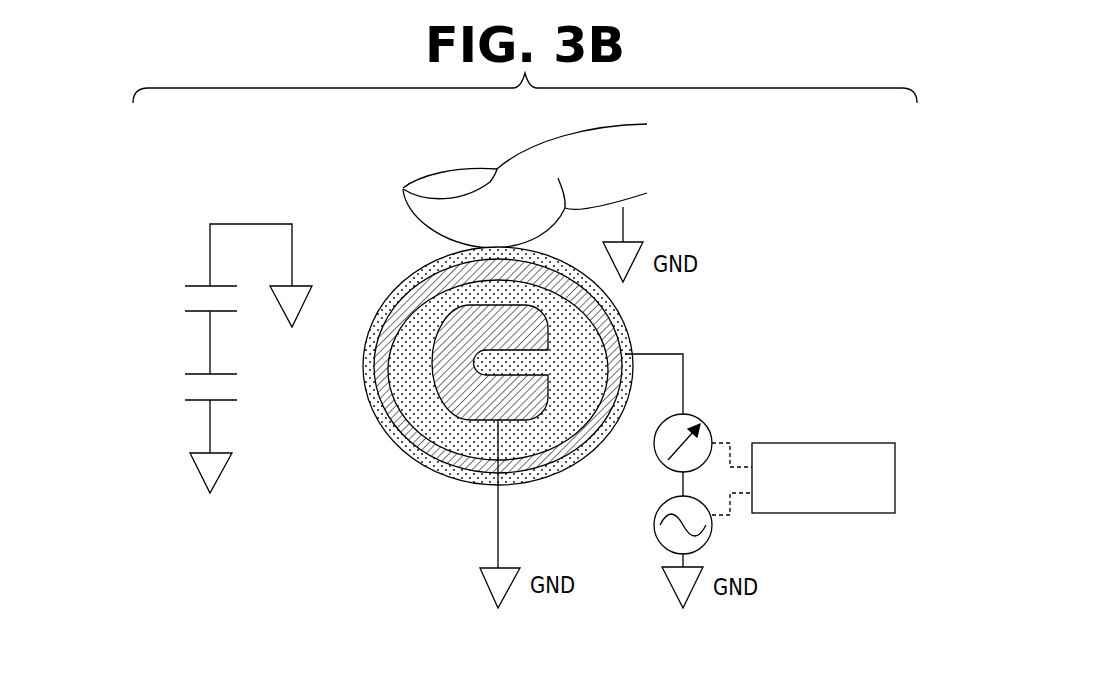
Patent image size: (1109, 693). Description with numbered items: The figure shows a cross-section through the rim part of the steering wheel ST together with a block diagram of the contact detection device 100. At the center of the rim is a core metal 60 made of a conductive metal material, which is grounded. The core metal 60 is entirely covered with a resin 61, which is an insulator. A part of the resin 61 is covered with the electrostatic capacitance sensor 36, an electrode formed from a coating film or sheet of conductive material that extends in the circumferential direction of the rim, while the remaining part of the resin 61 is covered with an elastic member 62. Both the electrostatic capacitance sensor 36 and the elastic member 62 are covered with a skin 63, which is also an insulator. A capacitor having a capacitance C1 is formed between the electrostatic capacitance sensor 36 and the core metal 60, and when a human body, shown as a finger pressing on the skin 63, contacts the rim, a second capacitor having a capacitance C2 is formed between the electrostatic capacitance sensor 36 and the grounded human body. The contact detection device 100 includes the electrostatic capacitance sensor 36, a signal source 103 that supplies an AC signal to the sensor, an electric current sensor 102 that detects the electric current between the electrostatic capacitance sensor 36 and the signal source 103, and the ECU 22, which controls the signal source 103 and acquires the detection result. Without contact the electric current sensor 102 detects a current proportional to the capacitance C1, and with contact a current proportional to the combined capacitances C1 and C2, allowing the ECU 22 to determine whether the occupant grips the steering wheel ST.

The ECU 22 is at (828, 442).
The electrostatic capacitance sensor 36 is at (375, 392).
The core metal 60 is at (467, 418).
The resin 61 is at (433, 423).
The elastic member 62 is at (548, 460).
The skin 63 is at (383, 428).
The contact detection device 100 is at (808, 262).
The electric current sensor 102 is at (700, 415).
The signal source 103 is at (655, 537).
The steering wheel ST is at (387, 262).
The capacitance C1 is at (188, 402).
The capacitance C2 is at (226, 275).